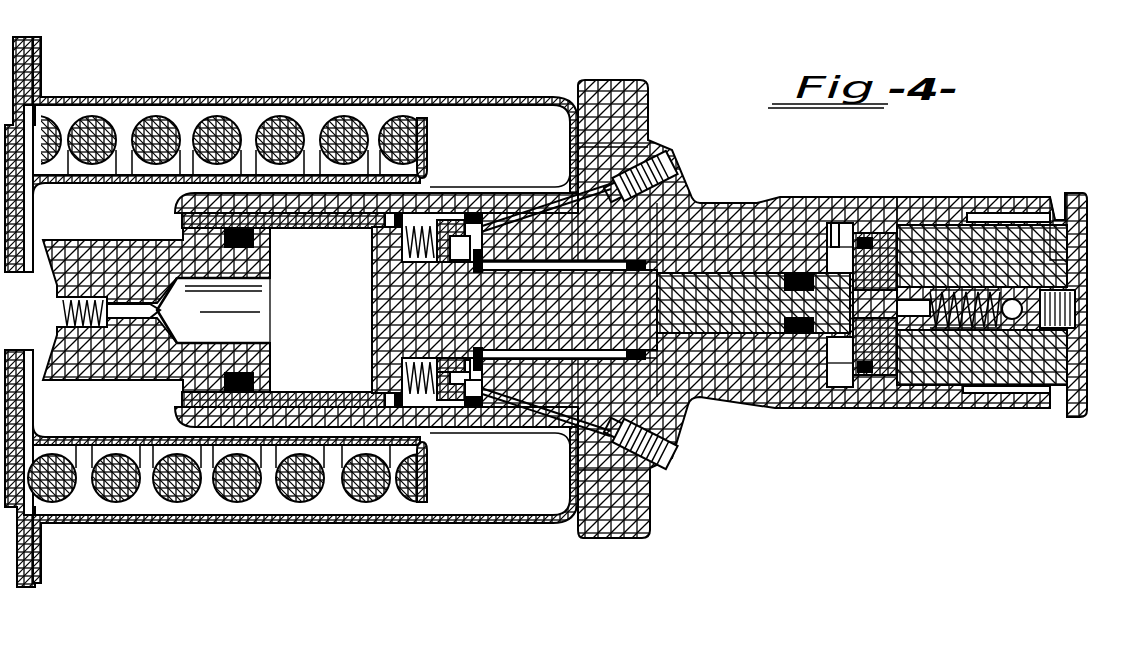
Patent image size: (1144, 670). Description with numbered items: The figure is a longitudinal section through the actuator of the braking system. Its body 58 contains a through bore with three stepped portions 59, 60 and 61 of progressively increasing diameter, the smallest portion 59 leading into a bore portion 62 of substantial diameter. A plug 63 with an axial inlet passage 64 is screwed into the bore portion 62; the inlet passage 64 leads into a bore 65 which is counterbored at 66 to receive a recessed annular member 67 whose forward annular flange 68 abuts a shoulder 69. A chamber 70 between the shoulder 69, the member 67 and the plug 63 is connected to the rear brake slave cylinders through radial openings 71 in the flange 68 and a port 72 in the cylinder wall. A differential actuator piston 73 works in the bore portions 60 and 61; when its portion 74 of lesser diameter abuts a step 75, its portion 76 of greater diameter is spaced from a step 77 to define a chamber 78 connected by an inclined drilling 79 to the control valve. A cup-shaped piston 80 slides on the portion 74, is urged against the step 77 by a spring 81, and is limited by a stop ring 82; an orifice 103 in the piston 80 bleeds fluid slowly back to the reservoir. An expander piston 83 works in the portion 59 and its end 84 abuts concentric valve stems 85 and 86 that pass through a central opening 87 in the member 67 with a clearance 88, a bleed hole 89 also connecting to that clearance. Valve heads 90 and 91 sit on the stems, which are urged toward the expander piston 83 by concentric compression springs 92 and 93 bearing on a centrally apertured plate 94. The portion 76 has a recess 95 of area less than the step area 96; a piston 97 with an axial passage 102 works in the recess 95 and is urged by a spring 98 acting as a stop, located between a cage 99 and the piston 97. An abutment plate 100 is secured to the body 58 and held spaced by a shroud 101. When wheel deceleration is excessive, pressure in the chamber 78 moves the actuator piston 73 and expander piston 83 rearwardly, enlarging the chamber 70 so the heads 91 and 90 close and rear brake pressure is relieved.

The body 58 is at (725, 232).
The smallest diameter bore portion 59 is at (772, 270).
The intermediate bore portion 60 is at (567, 150).
The largest diameter bore portion 61 is at (413, 213).
The bore portion 62 is at (955, 226).
The plug 63 is at (1050, 270).
The axial inlet passage 64 is at (1070, 286).
The bore 65 is at (1057, 212).
The counterbore 66 is at (888, 228).
The recessed annular member 67 is at (863, 227).
The annular flange 68 is at (875, 382).
The shoulder 69 is at (827, 378).
The chamber 70 is at (870, 358).
The radial openings 71 is at (840, 352).
The port 72 is at (840, 207).
The differential actuator piston 73 is at (540, 320).
The piston portion of lesser diameter 74 is at (580, 323).
The step 75 is at (686, 398).
The piston portion of greater diameter 76 is at (382, 373).
The step 77 is at (458, 393).
The chamber 78 is at (423, 394).
The inclined drilling 79 is at (663, 467).
The cup-shaped piston 80 is at (455, 390).
The spring 81 is at (408, 427).
The stop ring 82 is at (470, 217).
The expander piston 83 is at (722, 317).
The end of expander piston 84 is at (880, 402).
The inner valve stem 85 is at (1033, 392).
The outer valve stem 86 is at (960, 388).
The central opening 87 is at (913, 393).
The clearance 88 is at (952, 222).
The bleed hole 89 is at (990, 214).
The valve head 90 is at (1050, 343).
The valve head 91 is at (1000, 393).
The compression spring 92 is at (1053, 262).
The compression spring 93 is at (1055, 218).
The centrally apertured plate 94 is at (1022, 306).
The recess or blind bore 95 is at (297, 271).
The area of step 96 is at (436, 216).
The piston 97 is at (113, 270).
The spring 98 is at (165, 148).
The cage 99 is at (188, 445).
The abutment plate 100 is at (43, 530).
The cage or shroud 101 is at (147, 522).
The axial passage 102 is at (70, 330).
The orifice 103 is at (427, 397).